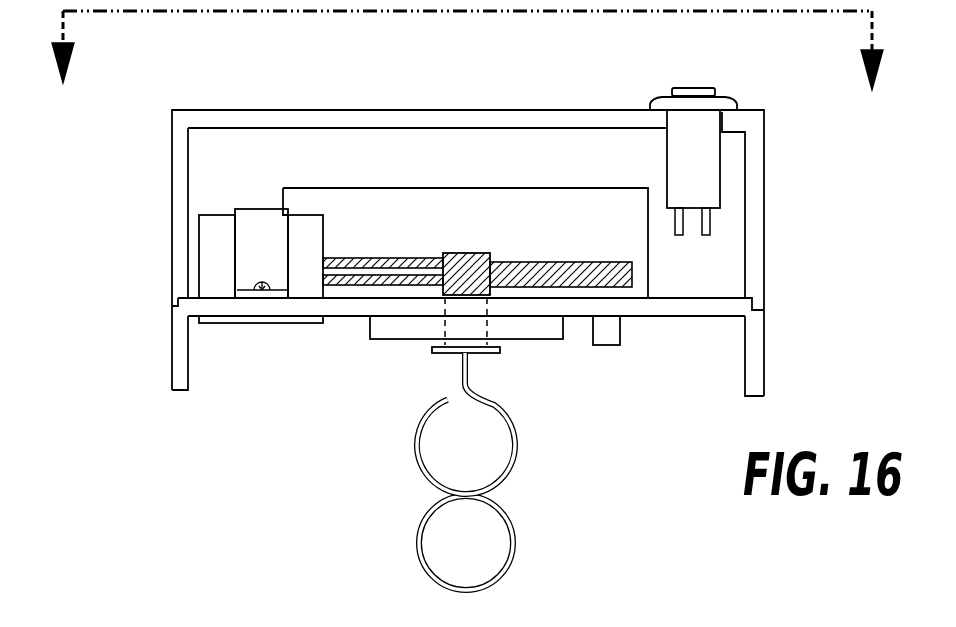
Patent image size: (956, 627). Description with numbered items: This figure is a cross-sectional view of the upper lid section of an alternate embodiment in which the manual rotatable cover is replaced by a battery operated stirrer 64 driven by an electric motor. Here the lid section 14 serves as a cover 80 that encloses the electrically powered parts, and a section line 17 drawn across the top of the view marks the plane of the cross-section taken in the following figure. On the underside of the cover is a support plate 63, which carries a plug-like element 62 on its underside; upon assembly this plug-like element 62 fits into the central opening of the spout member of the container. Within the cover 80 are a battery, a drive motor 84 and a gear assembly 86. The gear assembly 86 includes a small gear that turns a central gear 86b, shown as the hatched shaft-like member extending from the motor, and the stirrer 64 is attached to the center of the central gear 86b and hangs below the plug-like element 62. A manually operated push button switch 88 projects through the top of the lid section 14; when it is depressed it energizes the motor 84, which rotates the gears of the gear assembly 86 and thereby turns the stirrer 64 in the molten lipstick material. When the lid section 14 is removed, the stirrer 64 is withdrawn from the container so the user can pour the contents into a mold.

The lid section 14 is at (763, 236).
The section line 17- 17 is at (476, 75).
The plug-like element 62 is at (545, 332).
The support plate 63 is at (673, 318).
The stirrer 64 is at (518, 447).
The cover 80 is at (413, 105).
The drive motor 84 is at (305, 284).
The gear assembly 86 is at (435, 304).
The central gear 86b is at (530, 261).
The push button switch 88 is at (692, 88).